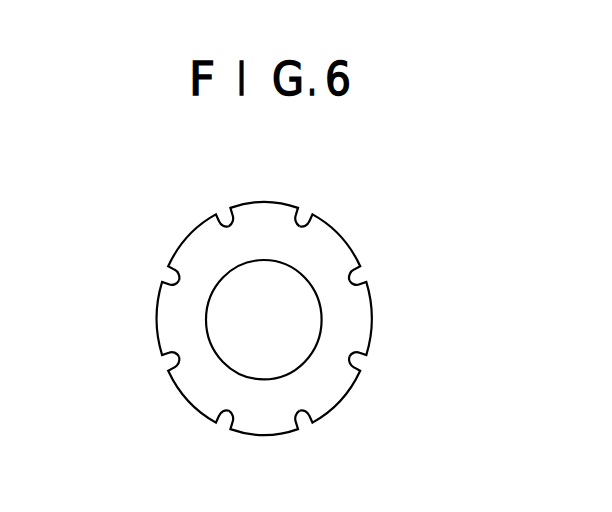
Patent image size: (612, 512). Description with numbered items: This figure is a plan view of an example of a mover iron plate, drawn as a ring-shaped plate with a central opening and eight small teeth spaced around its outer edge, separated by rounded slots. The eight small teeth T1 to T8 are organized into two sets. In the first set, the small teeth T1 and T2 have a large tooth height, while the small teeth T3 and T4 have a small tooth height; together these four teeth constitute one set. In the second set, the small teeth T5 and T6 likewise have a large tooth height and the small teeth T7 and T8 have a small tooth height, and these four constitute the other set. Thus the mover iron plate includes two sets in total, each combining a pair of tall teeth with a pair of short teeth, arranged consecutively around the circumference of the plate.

The small tooth T1 is at (275, 217).
The small tooth T2 is at (342, 230).
The small tooth T3 is at (363, 310).
The small tooth T4 is at (342, 382).
The small tooth T5 is at (272, 420).
The small tooth T6 is at (197, 393).
The small tooth T7 is at (170, 307).
The small tooth T8 is at (198, 228).